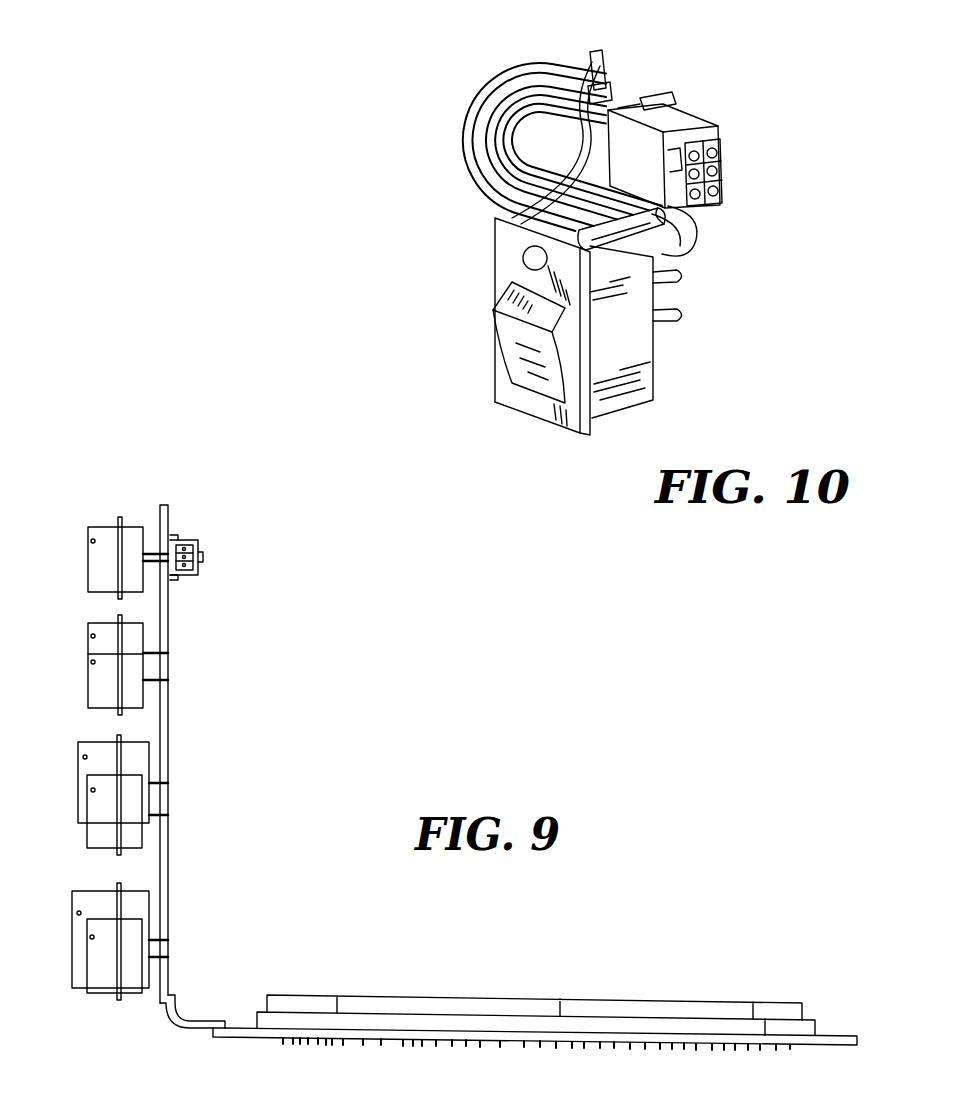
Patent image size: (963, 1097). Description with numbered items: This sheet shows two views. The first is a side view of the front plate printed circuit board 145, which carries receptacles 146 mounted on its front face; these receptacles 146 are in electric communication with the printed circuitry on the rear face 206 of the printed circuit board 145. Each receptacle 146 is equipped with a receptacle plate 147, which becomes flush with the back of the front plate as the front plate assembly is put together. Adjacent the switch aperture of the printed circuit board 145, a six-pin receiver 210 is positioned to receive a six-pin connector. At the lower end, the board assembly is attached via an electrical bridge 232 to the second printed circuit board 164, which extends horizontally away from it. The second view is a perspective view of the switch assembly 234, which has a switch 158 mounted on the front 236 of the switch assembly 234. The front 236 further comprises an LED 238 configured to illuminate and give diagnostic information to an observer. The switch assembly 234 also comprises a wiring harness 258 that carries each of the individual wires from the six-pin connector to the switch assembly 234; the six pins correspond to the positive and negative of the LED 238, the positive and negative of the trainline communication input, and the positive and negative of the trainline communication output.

In FIG. 9, the front plate printed circuit board 145 is at (167, 503).
In FIG. 9, the receptacle 146 is at (86, 580).
In FIG. 9, the receptacle plate 147 is at (120, 519).
In FIG. 10, the switch 158 is at (507, 370).
In FIG. 9, the second printed circuit board 164 is at (838, 1032).
In FIG. 9, the rear face 206 is at (174, 738).
In FIG. 9, the six-pin receiver 210 is at (201, 526).
In FIG. 9, the electrical bridge 232 is at (186, 1021).
In FIG. 10, the switch assembly 234 is at (750, 185).
In FIG. 10, the front 236 is at (520, 420).
In FIG. 10, the LED 238 is at (522, 258).
In FIG. 10, the wiring harness 258 is at (527, 66).